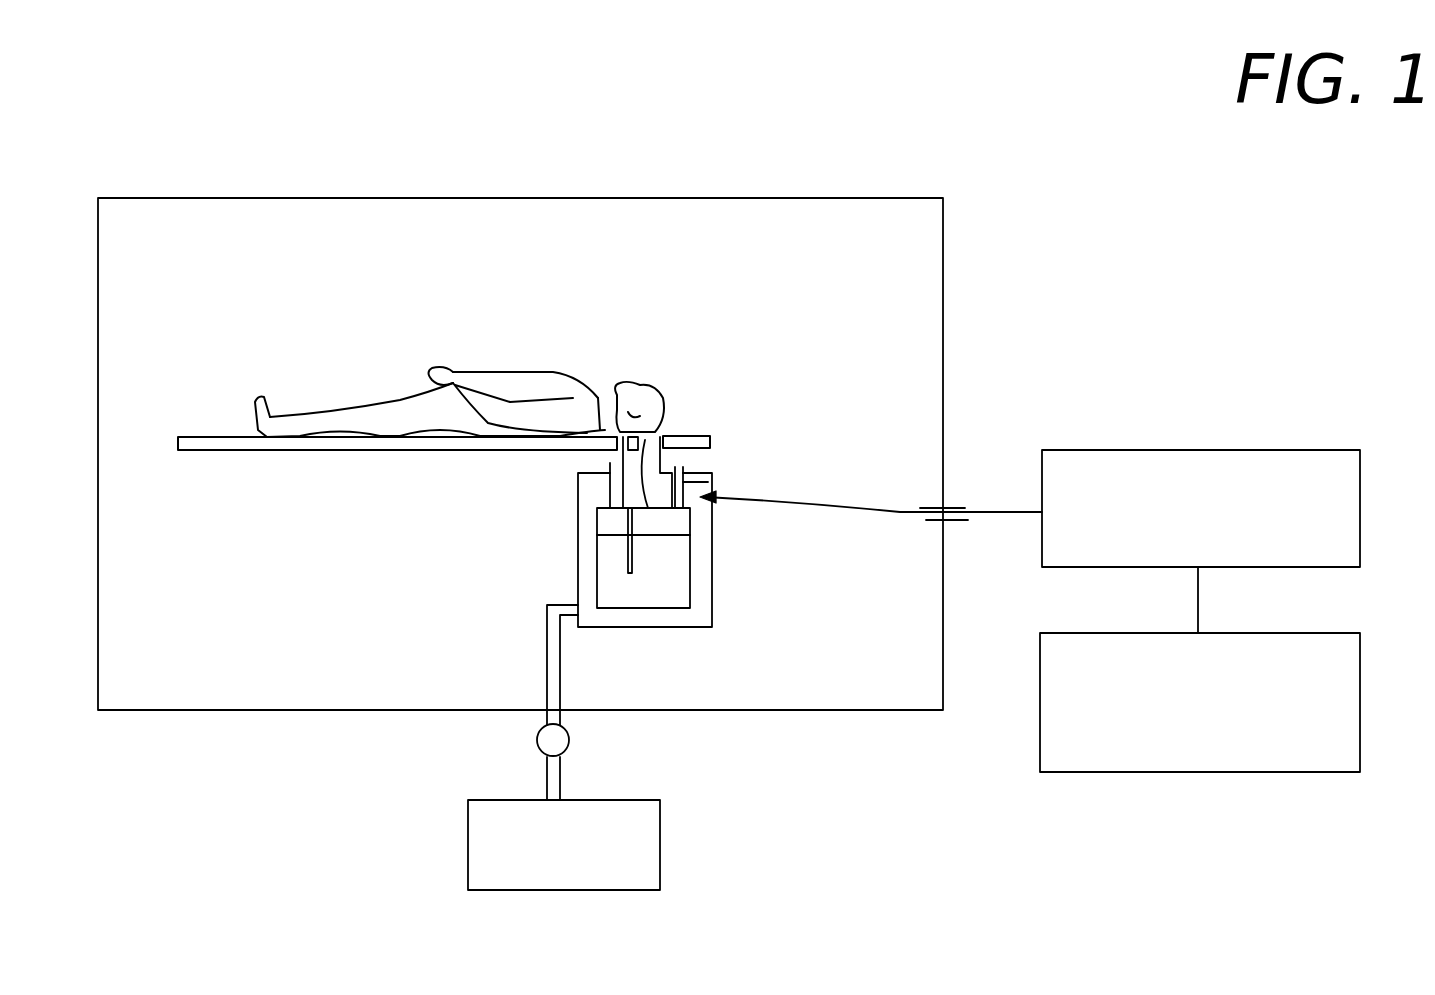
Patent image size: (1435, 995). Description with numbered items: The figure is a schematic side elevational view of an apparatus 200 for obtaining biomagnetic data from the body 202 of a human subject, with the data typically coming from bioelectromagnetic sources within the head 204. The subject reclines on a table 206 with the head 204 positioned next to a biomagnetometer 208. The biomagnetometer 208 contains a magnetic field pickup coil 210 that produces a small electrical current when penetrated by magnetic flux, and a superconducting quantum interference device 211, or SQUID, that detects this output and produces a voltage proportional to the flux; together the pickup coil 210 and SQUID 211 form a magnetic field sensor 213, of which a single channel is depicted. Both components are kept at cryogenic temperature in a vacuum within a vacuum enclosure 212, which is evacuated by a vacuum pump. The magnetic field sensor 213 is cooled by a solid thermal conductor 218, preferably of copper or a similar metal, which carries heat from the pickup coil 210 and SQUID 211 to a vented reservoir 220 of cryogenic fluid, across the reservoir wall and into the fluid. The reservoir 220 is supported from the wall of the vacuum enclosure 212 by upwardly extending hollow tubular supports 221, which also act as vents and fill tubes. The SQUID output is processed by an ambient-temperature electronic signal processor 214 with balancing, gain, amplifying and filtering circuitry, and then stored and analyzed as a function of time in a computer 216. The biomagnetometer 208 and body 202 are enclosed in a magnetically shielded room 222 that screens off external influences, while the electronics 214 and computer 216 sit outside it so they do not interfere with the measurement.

The apparatus 200 is at (315, 187).
The body 202 is at (400, 395).
The head 204 is at (662, 398).
The table 206 is at (190, 437).
The biomagnetometer 208 is at (728, 588).
The magnetic field pickup coil 210 is at (665, 433).
The superconducting quantum interference device 211 is at (636, 510).
The vacuum enclosure 212 is at (578, 533).
The magnetic field sensor 213 is at (600, 458).
The electronic signal processor 214 is at (1298, 450).
The computer 216 is at (1275, 772).
The solid thermal conductor 218 is at (637, 482).
The vented reservoir 220 is at (597, 572).
The hollow tubular supports 221 is at (710, 478).
The magnetically shielded room 222 is at (780, 198).